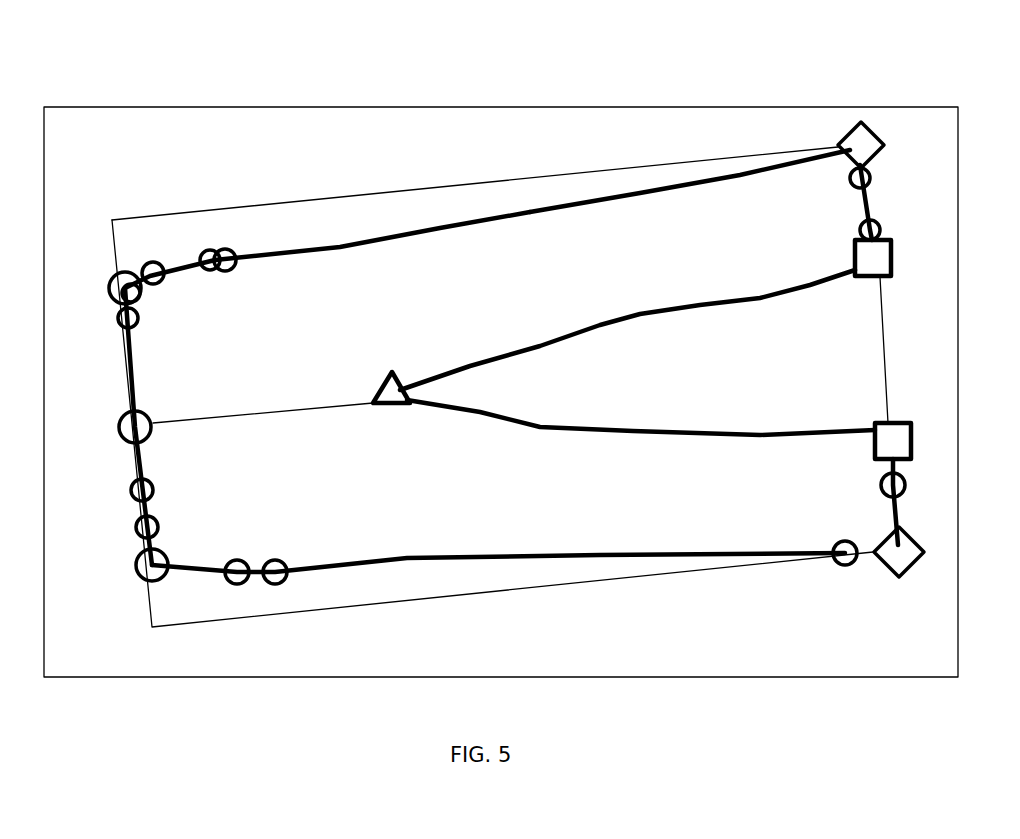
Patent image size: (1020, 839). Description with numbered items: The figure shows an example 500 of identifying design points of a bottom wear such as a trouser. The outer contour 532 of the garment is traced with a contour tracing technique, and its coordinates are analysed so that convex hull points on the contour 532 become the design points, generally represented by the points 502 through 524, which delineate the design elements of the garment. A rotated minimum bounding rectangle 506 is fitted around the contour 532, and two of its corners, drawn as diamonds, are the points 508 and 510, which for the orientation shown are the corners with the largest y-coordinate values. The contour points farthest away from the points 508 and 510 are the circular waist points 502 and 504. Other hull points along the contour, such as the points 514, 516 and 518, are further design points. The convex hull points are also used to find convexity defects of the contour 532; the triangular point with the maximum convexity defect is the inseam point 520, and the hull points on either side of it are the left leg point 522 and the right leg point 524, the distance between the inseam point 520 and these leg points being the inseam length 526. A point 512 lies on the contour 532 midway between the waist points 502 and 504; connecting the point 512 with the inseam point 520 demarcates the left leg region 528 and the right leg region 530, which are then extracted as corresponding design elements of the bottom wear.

The example for identification of design points of a bottom wear 500 is at (754, 58).
The waist point 502 is at (132, 275).
The waist point 504 is at (138, 572).
The rotated minimum bounding rectangle 506 is at (560, 167).
The RMBR corner point 508 is at (845, 162).
The RMBR corner point 510 is at (881, 545).
The midway point 512 is at (148, 442).
The design point 514 is at (278, 560).
The design point 516 is at (235, 270).
The design point 518 is at (882, 483).
The inseam point 520 is at (395, 372).
The left leg point 522 is at (866, 278).
The right leg point 524 is at (892, 422).
The inseam length 526 is at (633, 338).
The left leg region 528 is at (597, 222).
The right leg region 530 is at (673, 532).
The outer contour 532 is at (437, 218).